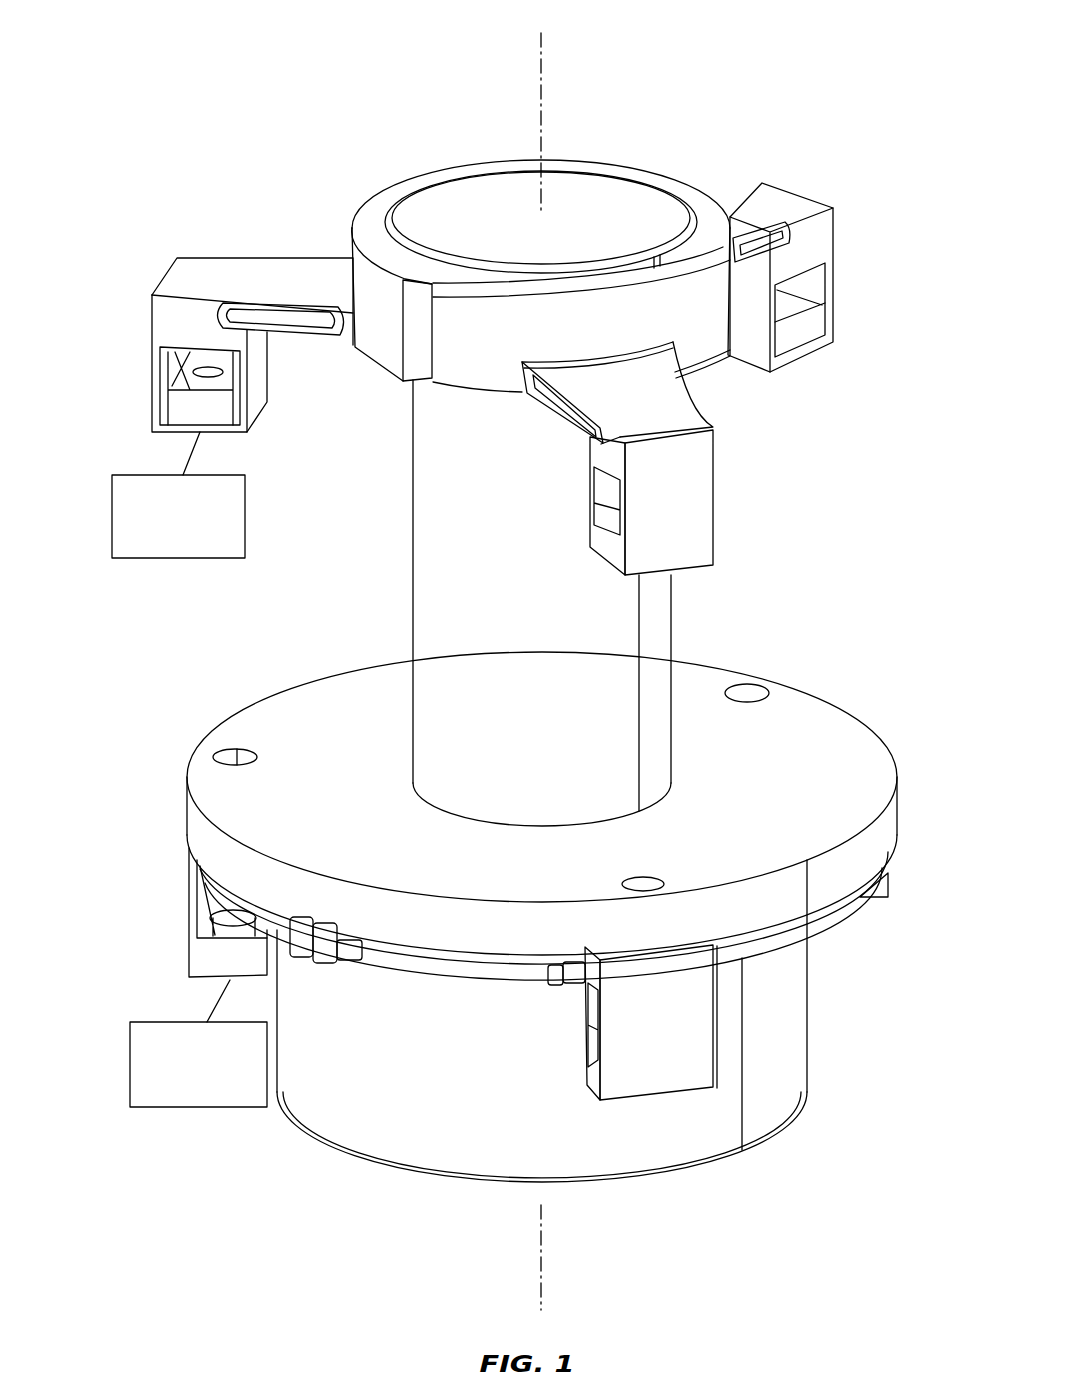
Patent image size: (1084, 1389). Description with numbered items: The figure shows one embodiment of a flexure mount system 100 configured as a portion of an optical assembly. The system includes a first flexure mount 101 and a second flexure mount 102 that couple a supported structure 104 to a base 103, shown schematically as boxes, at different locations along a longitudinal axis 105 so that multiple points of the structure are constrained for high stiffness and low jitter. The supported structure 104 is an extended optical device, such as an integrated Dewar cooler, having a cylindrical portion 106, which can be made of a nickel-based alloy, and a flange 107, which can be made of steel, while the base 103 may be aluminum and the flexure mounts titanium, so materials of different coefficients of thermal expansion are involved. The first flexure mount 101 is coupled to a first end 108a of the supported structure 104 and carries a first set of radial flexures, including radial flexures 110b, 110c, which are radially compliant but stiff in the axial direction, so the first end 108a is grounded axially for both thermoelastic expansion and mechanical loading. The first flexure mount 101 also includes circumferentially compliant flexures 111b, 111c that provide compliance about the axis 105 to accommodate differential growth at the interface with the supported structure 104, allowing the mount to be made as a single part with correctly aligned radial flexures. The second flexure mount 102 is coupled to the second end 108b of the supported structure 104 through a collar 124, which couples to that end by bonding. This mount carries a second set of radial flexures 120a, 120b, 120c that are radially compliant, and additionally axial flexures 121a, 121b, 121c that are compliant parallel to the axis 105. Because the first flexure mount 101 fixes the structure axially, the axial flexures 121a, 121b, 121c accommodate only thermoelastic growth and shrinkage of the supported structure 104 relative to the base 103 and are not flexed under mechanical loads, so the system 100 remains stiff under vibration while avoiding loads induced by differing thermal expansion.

The flexure mount system 100 is at (436, 38).
The first flexure mount 101 is at (880, 964).
The second flexure mount 102 is at (282, 183).
The base 103 is at (164, 560).
The supported structure 104 is at (382, 536).
The axis 105 is at (544, 86).
The cylindrical portion 106 is at (428, 598).
The flange 107 is at (246, 728).
The first end 108a is at (842, 1143).
The second end 108b is at (456, 148).
The radial flexure 110b is at (172, 896).
The radial flexure 110c is at (556, 1015).
The circumferentially compliant flexure 111b is at (320, 987).
The circumferentially compliant flexure 111c is at (903, 900).
The radial flexure 120a is at (852, 288).
The radial flexure 120b is at (134, 363).
The radial flexure 120c is at (568, 484).
The axial flexure 121a is at (750, 296).
The axial flexure 121b is at (297, 352).
The axial flexure 121c is at (540, 424).
The collar 124 is at (372, 230).